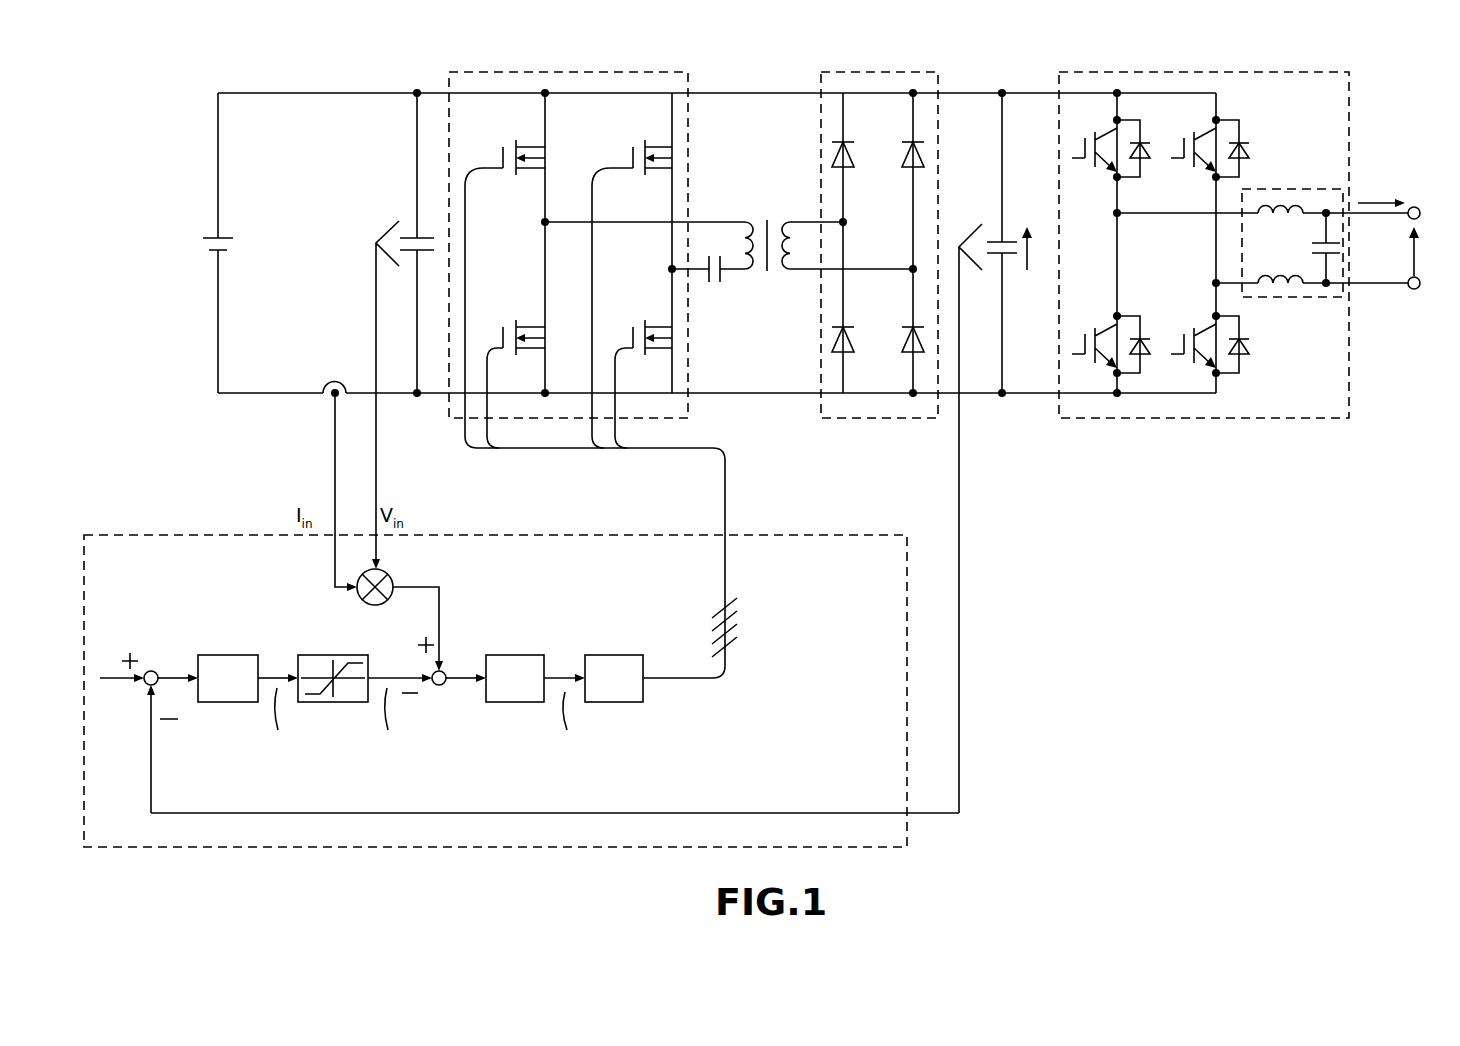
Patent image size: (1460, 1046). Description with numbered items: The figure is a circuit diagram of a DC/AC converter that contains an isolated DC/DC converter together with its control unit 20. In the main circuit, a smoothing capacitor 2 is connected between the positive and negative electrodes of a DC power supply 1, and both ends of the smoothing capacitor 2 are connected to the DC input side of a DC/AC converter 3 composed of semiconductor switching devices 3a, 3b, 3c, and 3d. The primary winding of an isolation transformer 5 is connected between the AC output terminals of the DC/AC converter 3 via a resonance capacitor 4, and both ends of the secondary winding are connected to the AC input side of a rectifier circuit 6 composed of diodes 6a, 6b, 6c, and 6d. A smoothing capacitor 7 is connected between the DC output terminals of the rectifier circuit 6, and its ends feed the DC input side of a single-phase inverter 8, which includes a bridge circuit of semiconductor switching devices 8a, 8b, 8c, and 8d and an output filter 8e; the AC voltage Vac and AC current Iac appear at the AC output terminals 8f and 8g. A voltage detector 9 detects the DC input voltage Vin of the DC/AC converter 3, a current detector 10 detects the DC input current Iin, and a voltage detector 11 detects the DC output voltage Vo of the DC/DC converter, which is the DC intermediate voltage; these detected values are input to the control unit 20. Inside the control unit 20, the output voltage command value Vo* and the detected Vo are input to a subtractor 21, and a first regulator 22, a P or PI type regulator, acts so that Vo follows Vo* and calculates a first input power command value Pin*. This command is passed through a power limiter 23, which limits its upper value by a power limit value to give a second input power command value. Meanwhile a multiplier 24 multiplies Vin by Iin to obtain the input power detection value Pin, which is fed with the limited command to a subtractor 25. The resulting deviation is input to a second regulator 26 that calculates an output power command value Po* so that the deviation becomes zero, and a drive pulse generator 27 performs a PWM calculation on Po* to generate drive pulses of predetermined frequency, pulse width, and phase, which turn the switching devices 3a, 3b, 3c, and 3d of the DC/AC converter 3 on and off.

The DC power supply 1 is at (206, 230).
The smoothing capacitor 2 is at (425, 228).
The DC/AC converter 3 is at (546, 70).
The semiconductor switching device 3a is at (500, 150).
The semiconductor switching device 3b is at (500, 332).
The semiconductor switching device 3c is at (627, 150).
The semiconductor switching device 3d is at (627, 332).
The resonance capacitor 4 is at (712, 292).
The isolation transformer 5 is at (769, 215).
The rectifier circuit 6 is at (878, 70).
The diode 6a is at (828, 153).
The diode 6b is at (826, 340).
The diode 6c is at (894, 160).
The diode 6d is at (895, 337).
The smoothing capacitor 7 is at (1010, 265).
The single-phase inverter 8 is at (1207, 70).
The semiconductor switching device 8a is at (1082, 170).
The semiconductor switching device 8b is at (1082, 338).
The semiconductor switching device 8c is at (1183, 168).
The semiconductor switching device 8d is at (1182, 332).
The output filter 8e is at (1290, 302).
The AC output terminal 8f is at (1418, 205).
The AC output terminal 8g is at (1413, 292).
The voltage detector 9 is at (383, 223).
The current detector 10 is at (336, 378).
The voltage detector 11 is at (976, 228).
The control unit 20 is at (215, 533).
The subtractor 21 is at (149, 668).
The first regulator 22 is at (222, 662).
The power limiter 23 is at (350, 696).
The multiplier 24 is at (375, 605).
The subtractor 25 is at (437, 690).
The second regulator 26 is at (515, 706).
The drive pulse generator 27 is at (617, 706).